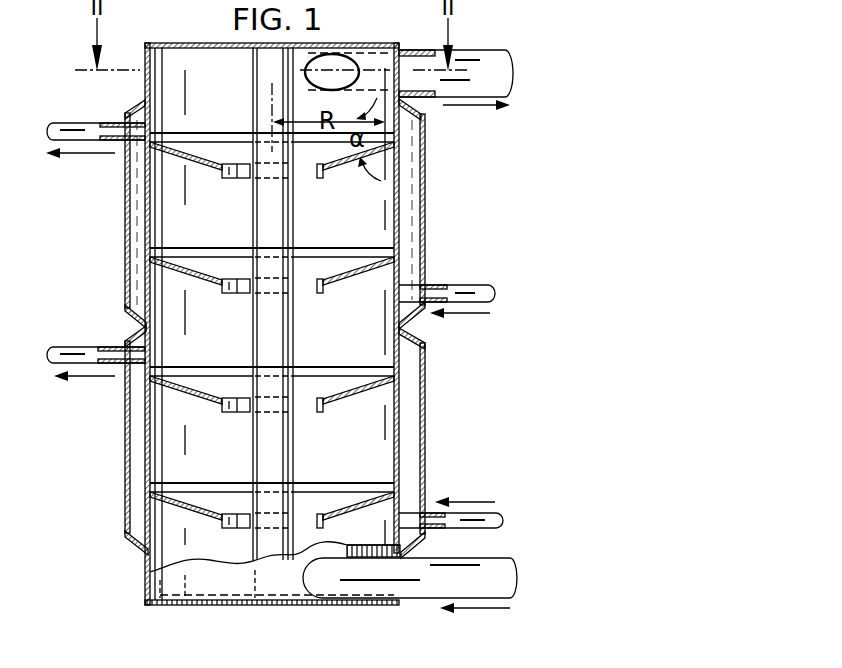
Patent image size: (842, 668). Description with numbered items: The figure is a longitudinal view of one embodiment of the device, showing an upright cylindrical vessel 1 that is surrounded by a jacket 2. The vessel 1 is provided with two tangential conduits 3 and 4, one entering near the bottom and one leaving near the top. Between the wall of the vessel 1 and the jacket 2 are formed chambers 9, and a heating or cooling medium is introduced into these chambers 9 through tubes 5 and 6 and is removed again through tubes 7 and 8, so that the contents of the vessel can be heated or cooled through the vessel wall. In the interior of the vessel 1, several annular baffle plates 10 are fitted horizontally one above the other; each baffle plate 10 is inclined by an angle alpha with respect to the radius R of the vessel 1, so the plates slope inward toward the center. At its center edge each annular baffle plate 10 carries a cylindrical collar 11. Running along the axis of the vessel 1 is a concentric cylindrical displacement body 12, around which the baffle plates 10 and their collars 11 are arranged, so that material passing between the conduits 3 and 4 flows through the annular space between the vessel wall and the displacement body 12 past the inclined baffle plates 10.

The upright cylindrical vessel 1 is at (350, 45).
The jacket 2 is at (425, 160).
The tangential conduit 3 is at (425, 592).
The tangential conduit 4 is at (492, 62).
The tube 5 is at (505, 512).
The tube 6 is at (478, 288).
The tube 7 is at (68, 349).
The tube 8 is at (66, 124).
The chamber 9 is at (411, 232).
The annular baffle plate 10 is at (350, 280).
The cylindrical collar 11 is at (325, 404).
The concentric cylindrical displacement body 12 is at (292, 212).